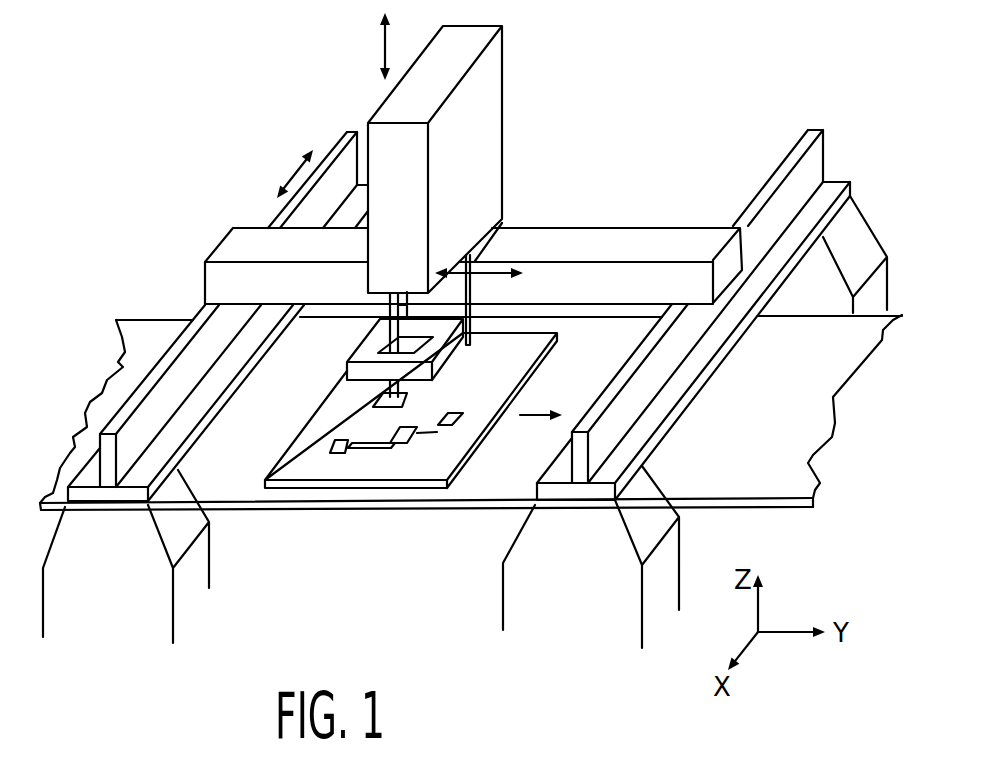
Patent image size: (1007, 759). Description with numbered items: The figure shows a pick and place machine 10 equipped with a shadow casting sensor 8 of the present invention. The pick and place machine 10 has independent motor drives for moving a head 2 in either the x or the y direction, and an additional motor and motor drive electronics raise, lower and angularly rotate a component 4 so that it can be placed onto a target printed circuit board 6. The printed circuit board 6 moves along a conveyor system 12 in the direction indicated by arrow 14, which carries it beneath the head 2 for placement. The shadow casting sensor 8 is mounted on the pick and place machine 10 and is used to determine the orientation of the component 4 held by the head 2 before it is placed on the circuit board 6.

The head 2 is at (502, 72).
The component 4 is at (408, 397).
The printed circuit board 6 is at (296, 473).
The shadow casting sensor 8 is at (446, 356).
The pick and place machine 10 is at (689, 158).
The conveyor system 12 is at (405, 503).
The arrow 14 is at (532, 433).